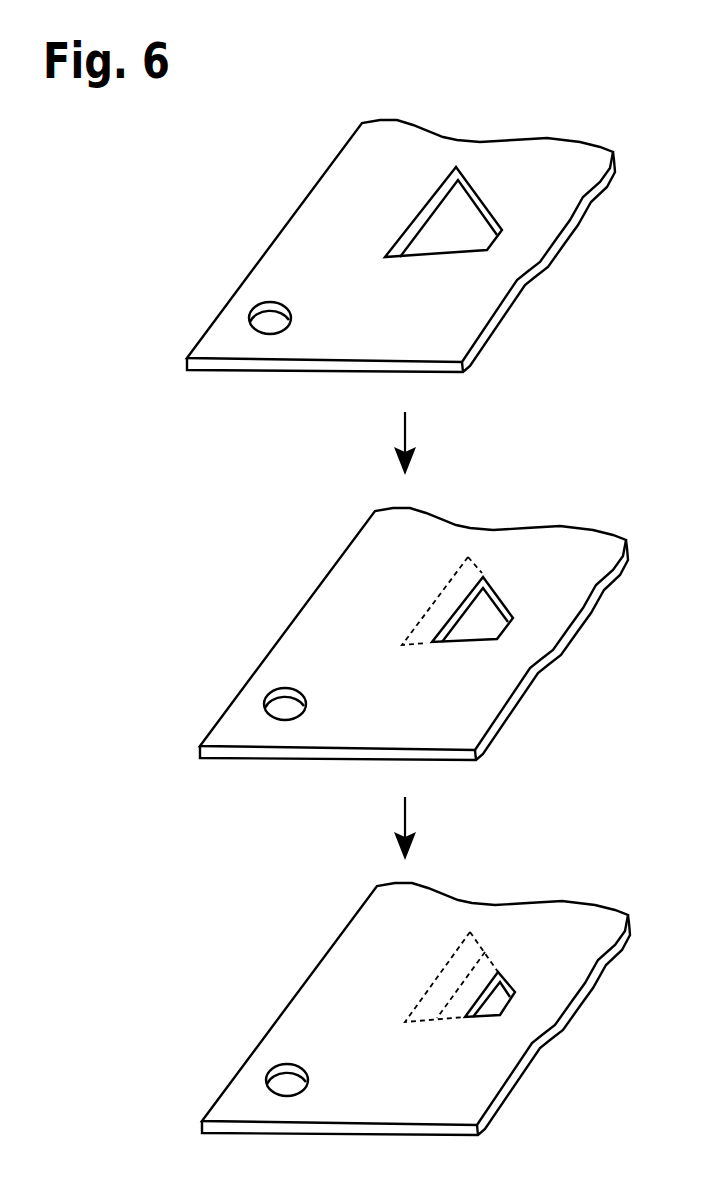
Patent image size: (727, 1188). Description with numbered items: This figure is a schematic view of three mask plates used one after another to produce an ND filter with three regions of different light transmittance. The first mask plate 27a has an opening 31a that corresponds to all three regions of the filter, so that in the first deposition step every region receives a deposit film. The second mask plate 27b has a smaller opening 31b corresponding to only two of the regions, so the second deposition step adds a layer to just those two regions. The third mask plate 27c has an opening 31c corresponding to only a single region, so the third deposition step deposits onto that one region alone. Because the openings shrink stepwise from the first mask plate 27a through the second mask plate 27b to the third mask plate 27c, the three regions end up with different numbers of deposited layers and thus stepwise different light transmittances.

The first mask plate 27a is at (538, 273).
The opening 31a is at (458, 197).
The second mask plate 27b is at (547, 663).
The opening 31b is at (485, 603).
The third mask plate 27c is at (553, 1038).
The opening 31c is at (505, 984).